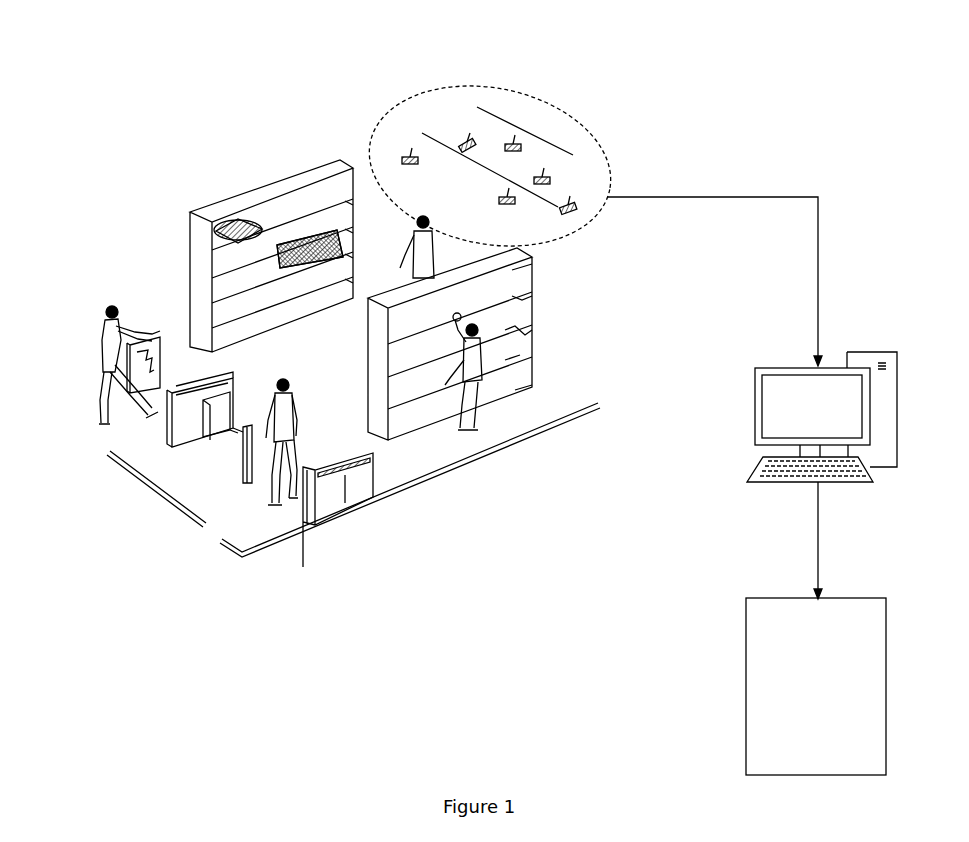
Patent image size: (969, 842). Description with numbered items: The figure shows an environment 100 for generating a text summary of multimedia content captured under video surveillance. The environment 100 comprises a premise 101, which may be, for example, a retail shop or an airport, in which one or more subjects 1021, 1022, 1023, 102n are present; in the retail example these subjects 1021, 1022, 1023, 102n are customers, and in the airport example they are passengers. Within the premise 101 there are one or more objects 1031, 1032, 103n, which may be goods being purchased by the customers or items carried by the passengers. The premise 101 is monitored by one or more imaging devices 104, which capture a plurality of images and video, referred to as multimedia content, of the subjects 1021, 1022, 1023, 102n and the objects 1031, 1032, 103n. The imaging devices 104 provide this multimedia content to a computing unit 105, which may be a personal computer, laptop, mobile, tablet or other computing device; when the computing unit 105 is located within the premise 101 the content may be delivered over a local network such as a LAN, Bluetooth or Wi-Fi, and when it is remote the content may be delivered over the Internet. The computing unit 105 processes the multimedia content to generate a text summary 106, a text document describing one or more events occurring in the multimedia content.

The environment 100 is at (84, 48).
The premise 101 is at (152, 104).
The subject 1021 is at (112, 306).
The subject 1022 is at (285, 377).
The subject 1023 is at (473, 406).
The subject 102n is at (417, 242).
The object 1031 is at (462, 318).
The object 1032 is at (229, 215).
The object 103n is at (293, 242).
The imaging devices 104 is at (574, 138).
The computing unit 105 is at (884, 396).
The text summary 106 is at (884, 642).